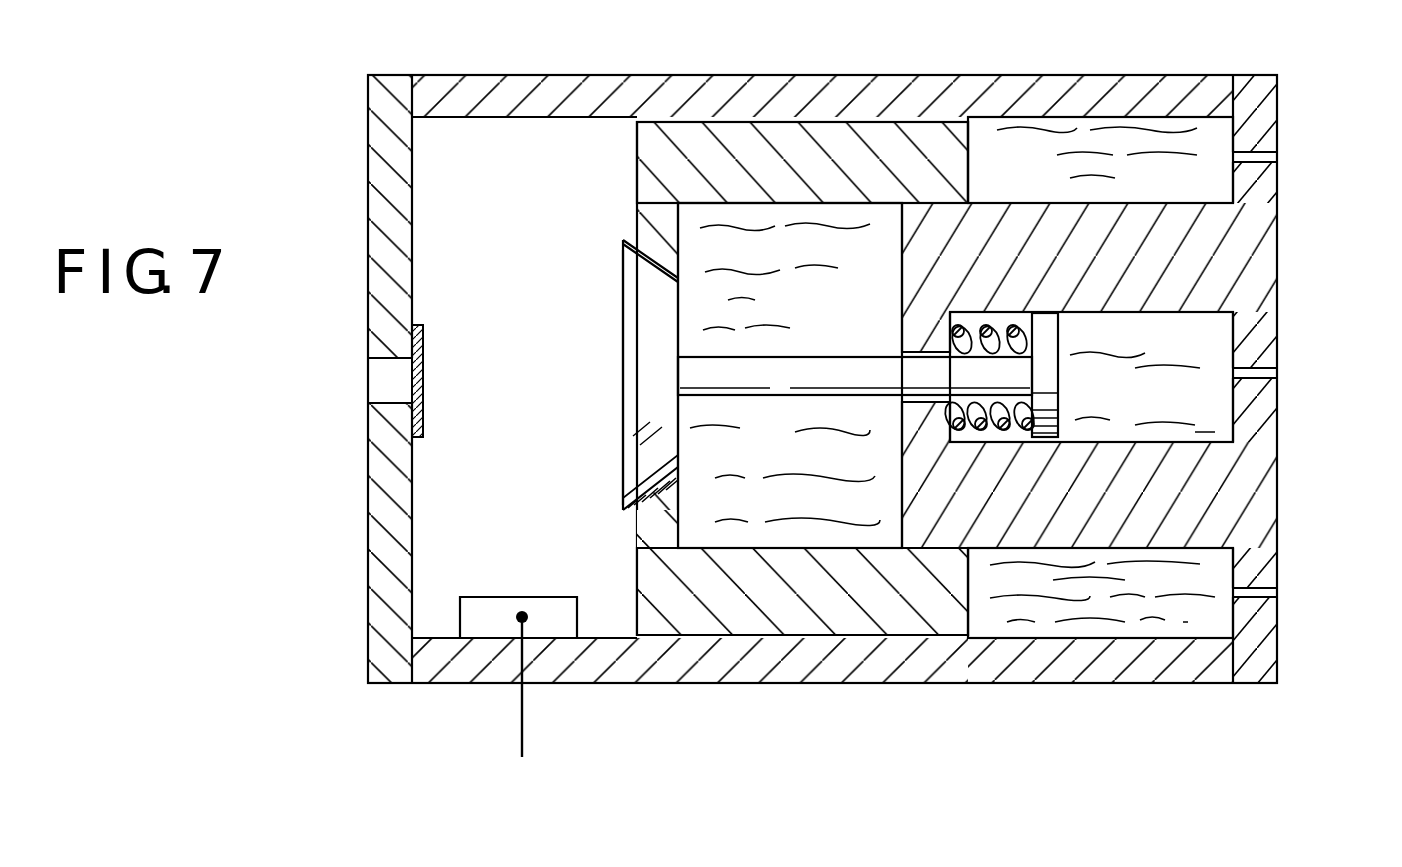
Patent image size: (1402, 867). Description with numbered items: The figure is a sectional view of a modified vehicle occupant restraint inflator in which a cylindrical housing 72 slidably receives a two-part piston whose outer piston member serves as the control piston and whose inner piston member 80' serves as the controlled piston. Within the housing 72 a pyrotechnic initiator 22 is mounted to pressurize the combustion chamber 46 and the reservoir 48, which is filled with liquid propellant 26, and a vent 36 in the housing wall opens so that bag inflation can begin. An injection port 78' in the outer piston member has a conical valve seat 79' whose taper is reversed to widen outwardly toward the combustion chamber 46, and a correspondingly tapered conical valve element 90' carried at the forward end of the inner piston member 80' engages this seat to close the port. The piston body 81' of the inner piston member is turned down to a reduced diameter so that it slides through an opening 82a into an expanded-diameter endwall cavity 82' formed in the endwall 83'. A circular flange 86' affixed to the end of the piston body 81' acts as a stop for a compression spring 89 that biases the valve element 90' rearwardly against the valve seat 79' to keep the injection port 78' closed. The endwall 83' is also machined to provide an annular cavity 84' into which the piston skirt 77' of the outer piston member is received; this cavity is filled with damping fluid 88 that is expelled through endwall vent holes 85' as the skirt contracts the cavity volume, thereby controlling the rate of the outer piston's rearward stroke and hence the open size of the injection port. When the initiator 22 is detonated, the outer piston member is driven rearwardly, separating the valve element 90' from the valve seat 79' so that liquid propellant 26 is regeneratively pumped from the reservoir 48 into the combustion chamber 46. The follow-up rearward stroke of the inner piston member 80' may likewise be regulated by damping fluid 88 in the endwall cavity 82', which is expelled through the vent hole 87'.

The cylindrical housing 72 is at (605, 86).
The piston skirt 77' is at (836, 111).
The endwall vent holes 85' is at (1317, 135).
The annular cavity 84' is at (1135, 213).
The endwall 83' is at (1124, 380).
The vent hole 87' is at (1311, 381).
The damping fluid 88 is at (1042, 183).
The compression spring 89 is at (1034, 330).
The circular flange 86' is at (1087, 375).
The endwall cavity 82' is at (1091, 377).
The opening 82a is at (908, 352).
The piston body 81' is at (855, 378).
The inner piston member 80' is at (790, 375).
The conical valve element 90' is at (601, 375).
The injection port 78' is at (573, 377).
The combustion chamber 46 is at (547, 490).
The valve seat 79' is at (603, 495).
The pyrotechnic initiator 22 is at (488, 608).
The vent 36 is at (378, 398).
The liquid propellant 26 is at (733, 512).
The reservoir 48 is at (835, 540).